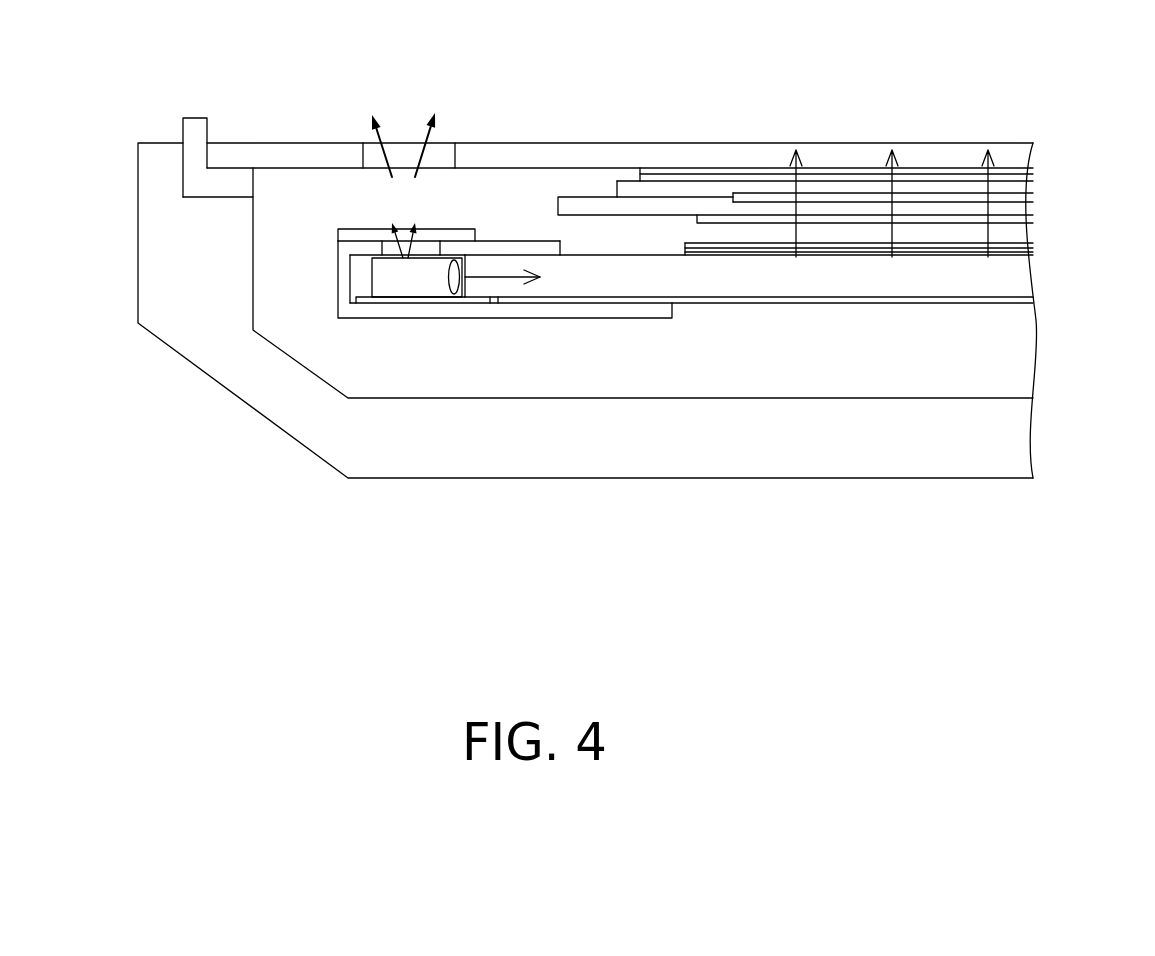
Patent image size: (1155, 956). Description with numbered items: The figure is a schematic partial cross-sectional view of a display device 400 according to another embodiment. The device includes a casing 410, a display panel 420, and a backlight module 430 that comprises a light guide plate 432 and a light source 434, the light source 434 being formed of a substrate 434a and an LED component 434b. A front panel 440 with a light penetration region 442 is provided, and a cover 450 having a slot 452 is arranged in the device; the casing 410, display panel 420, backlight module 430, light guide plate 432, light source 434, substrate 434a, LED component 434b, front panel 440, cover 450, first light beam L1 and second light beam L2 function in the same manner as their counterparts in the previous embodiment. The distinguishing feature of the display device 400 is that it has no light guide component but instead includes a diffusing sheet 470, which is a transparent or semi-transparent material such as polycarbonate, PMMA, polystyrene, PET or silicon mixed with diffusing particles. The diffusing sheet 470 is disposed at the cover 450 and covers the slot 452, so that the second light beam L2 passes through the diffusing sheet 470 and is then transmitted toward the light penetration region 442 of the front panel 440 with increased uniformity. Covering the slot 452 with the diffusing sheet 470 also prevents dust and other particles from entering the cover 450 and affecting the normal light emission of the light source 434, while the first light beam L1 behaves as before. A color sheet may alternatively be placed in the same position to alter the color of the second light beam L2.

The display device 400 is at (1148, 580).
The casing 410 is at (190, 318).
The display panel 420 is at (585, 210).
The backlight module 430 is at (663, 528).
The light guide plate 432 is at (697, 283).
The light source 434 is at (440, 306).
The substrate 434a is at (415, 300).
The LED component 434b is at (380, 282).
The front panel 440 is at (940, 150).
The light penetration region 442 is at (408, 147).
The cover 450 is at (343, 270).
The slot 452 is at (440, 248).
The diffusing sheet 470 is at (337, 237).
The first light beam L1 is at (520, 275).
The second light beam L2 is at (403, 253).